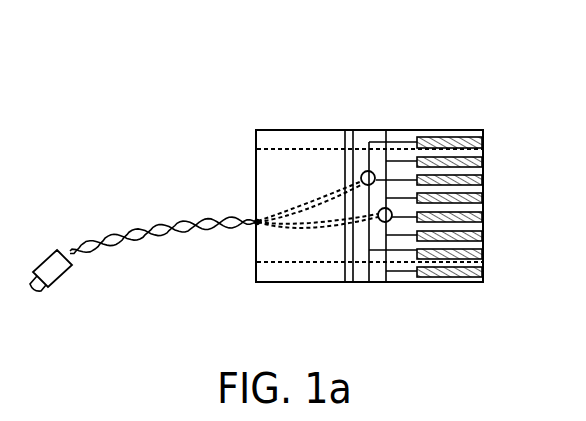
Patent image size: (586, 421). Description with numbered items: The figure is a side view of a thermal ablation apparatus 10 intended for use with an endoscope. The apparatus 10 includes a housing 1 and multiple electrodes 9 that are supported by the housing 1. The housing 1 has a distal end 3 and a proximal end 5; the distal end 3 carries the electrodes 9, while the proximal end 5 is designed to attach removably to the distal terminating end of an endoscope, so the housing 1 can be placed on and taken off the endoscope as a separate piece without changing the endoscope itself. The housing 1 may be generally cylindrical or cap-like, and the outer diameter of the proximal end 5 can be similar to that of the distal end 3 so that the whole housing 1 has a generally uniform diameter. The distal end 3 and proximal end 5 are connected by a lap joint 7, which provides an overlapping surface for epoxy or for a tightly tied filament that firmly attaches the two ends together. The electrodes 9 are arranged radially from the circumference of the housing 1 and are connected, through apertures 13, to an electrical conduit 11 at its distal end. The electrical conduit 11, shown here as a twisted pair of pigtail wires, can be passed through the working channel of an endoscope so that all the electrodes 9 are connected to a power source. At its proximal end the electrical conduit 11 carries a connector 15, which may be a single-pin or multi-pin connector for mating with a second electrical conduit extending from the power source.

The thermal ablation apparatus 10 is at (471, 55).
The housing 1 is at (310, 128).
The distal end 3 is at (444, 129).
The proximal end 5 is at (309, 284).
The lap joint 7 is at (349, 284).
The electrodes 9 is at (483, 217).
The electrical conduit 11 is at (137, 228).
The apertures 13 is at (378, 215).
The connector 15 is at (60, 284).